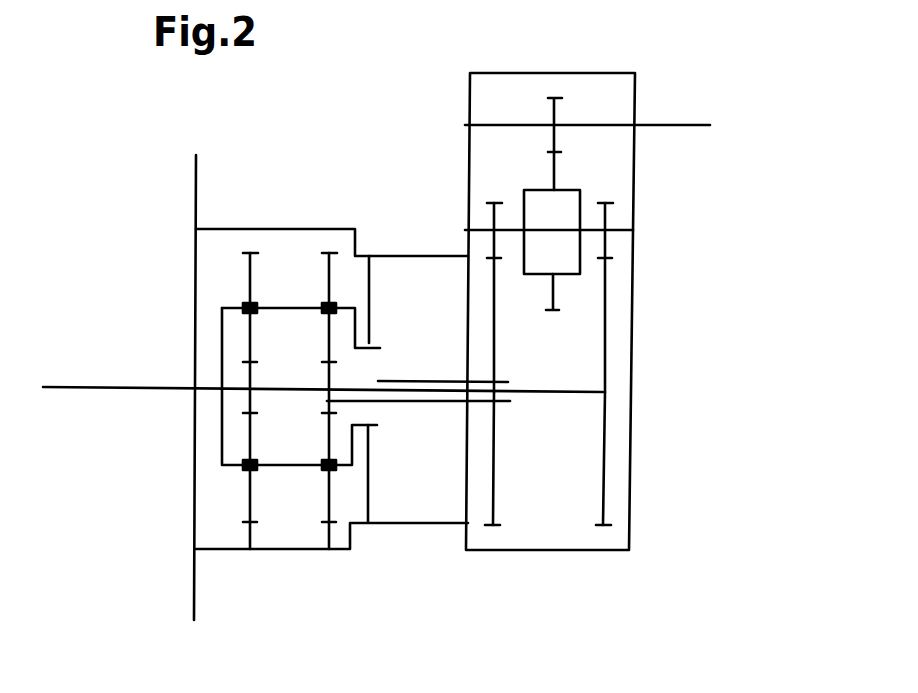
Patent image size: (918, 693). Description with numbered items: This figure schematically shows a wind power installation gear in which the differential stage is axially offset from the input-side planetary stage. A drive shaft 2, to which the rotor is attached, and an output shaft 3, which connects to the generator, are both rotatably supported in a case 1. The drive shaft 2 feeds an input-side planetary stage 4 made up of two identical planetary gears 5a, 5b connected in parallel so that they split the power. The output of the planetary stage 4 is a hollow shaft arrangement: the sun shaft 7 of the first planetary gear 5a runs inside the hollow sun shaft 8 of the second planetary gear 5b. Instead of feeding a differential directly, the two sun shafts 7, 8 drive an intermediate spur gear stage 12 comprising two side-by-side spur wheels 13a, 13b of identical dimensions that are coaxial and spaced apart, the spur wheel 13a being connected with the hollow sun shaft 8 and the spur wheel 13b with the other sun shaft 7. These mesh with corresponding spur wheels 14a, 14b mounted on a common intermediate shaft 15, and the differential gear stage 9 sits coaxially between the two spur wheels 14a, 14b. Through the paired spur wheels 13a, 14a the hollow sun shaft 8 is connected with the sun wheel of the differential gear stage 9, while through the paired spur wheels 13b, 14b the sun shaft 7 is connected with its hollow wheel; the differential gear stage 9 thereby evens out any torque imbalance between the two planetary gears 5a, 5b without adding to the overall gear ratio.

The case 1 is at (390, 255).
The drive shaft 2 is at (103, 382).
The output shaft 3 is at (686, 125).
The planetary stage 4 is at (280, 567).
The first planetary gear 5a is at (258, 330).
The second planetary gear 5b is at (317, 333).
The sun shaft 7 is at (422, 394).
The hollow sun shaft 8 is at (380, 403).
The differential gear stage 9 is at (557, 73).
The intermediate spur gear stage 12 is at (468, 597).
The spur wheel 13a is at (493, 460).
The spur wheel 13b is at (603, 472).
The spur wheel 14a is at (497, 215).
The spur wheel 14b is at (606, 212).
The intermediate shaft 15 is at (615, 230).